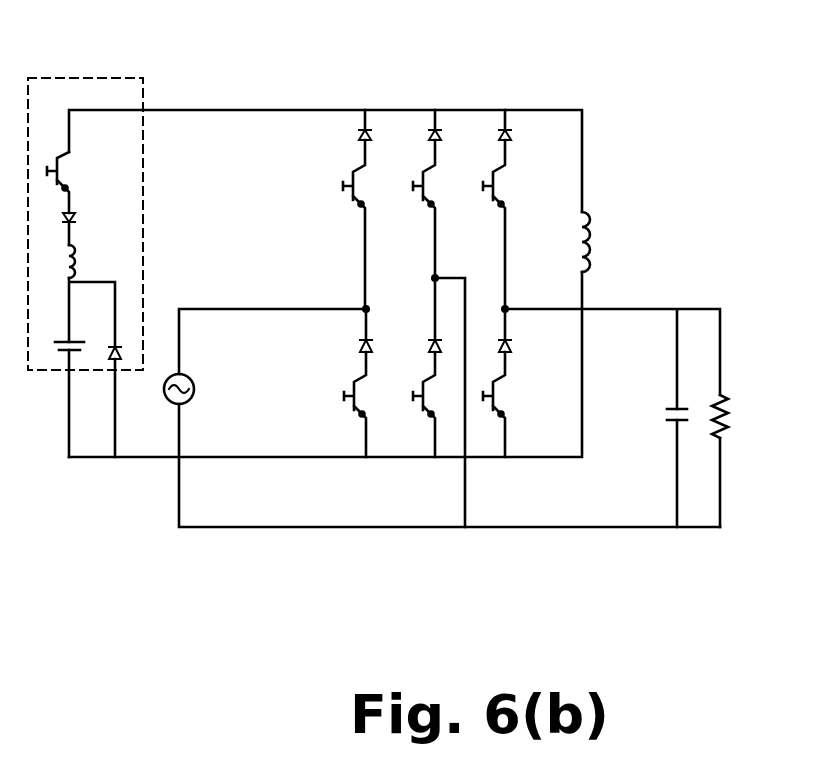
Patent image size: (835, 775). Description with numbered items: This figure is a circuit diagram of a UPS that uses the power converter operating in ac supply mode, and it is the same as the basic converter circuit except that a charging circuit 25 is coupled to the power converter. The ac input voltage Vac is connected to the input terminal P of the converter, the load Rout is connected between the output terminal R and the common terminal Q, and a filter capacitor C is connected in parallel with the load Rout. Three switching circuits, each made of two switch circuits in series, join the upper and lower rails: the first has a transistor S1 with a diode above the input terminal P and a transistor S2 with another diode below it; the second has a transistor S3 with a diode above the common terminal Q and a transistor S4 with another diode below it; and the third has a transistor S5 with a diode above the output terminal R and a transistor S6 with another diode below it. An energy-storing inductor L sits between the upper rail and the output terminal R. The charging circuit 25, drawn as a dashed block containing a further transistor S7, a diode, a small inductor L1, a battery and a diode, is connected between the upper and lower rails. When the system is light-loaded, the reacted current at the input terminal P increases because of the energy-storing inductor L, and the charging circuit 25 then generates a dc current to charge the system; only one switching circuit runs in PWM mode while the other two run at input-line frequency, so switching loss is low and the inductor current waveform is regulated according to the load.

The charging circuit 25 is at (103, 234).
The transistor S1 is at (343, 209).
The transistor S2 is at (348, 383).
The transistor S3 is at (413, 194).
The transistor S4 is at (418, 367).
The transistor S5 is at (484, 209).
The transistor S6 is at (489, 383).
The switch S7 is at (77, 187).
The energy-storing inductor L is at (597, 242).
The inductor L1 is at (89, 261).
The filter capacitor C is at (667, 417).
The load Rout is at (744, 426).
The ac input voltage Vac is at (159, 389).